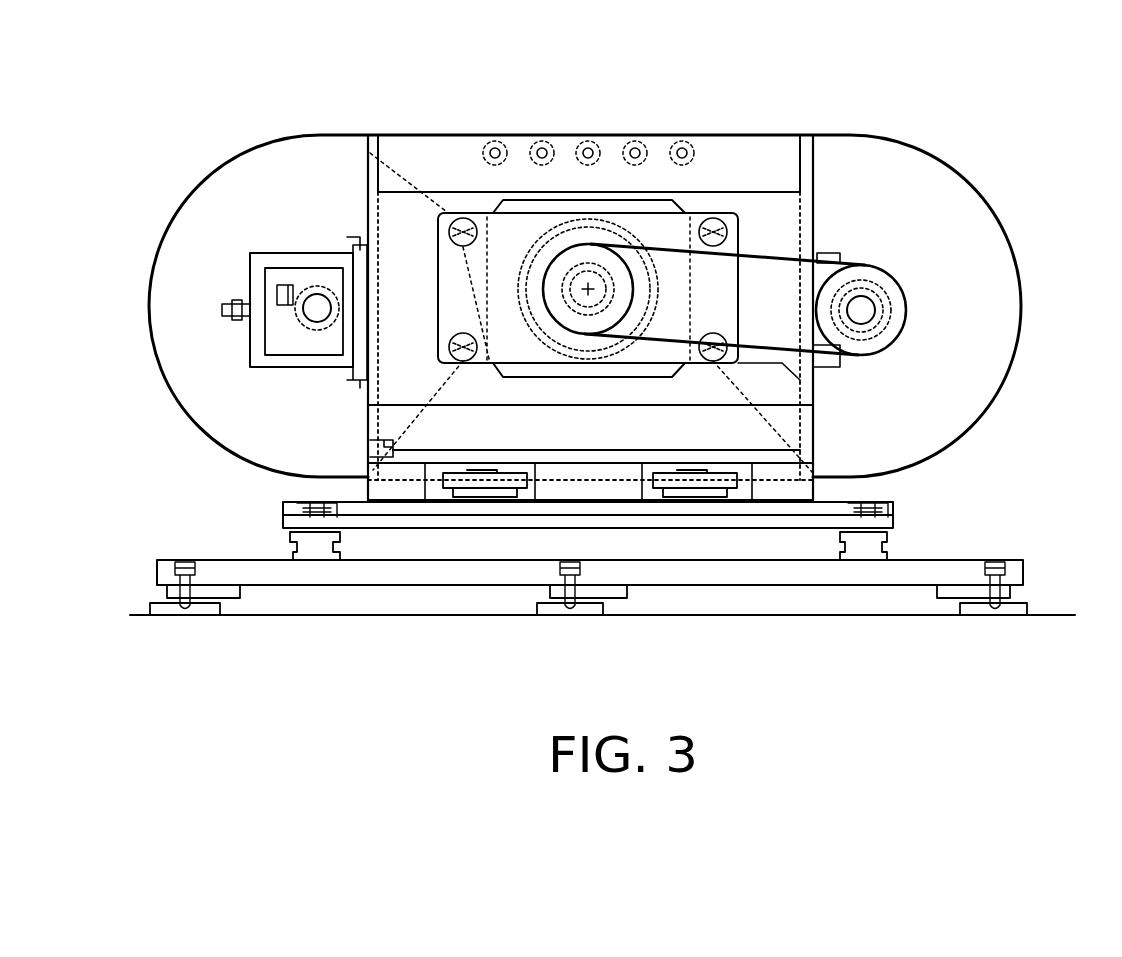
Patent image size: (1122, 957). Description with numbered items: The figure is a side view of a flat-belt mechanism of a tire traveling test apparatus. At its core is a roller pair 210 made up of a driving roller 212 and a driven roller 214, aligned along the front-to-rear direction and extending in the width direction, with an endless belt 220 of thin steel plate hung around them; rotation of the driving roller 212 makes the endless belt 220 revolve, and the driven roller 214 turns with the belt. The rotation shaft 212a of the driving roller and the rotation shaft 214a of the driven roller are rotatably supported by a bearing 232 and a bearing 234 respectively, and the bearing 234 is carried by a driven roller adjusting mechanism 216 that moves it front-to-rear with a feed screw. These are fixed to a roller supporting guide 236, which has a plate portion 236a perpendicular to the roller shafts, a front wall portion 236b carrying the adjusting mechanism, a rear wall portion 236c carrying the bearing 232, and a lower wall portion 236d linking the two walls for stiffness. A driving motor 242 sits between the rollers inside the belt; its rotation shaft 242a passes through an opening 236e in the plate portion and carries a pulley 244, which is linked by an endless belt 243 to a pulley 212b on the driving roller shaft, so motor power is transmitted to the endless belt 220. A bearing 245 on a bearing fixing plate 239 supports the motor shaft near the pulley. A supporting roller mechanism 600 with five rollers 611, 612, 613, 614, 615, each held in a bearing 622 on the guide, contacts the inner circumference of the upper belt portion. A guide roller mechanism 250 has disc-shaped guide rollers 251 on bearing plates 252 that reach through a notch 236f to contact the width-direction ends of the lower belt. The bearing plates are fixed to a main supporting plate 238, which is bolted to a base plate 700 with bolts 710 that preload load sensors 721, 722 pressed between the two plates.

The roller pair 210 is at (1030, 414).
The driving roller 212 is at (1003, 258).
The rotation shaft of the driving roller 212a is at (863, 290).
The pulley 212b is at (887, 338).
The driven roller 214 is at (212, 202).
The rotation shaft of the driven roller 214a is at (317, 328).
The driven roller adjusting mechanism 216 is at (250, 349).
The endless belt 220 is at (823, 128).
The bearing 232 is at (905, 310).
The bearing 234 is at (307, 287).
The roller supporting guide 236 is at (462, 134).
The plate portion 236a is at (438, 134).
The front wall portion 236b is at (370, 171).
The rear wall portion 236c is at (813, 174).
The lower wall portion 236d is at (373, 451).
The opening 236e is at (728, 135).
The notch 236f is at (500, 502).
The main supporting plate 238 is at (833, 500).
The bearing fixing plate 239 is at (403, 244).
The driving motor 242 is at (620, 240).
The rotation shaft of the driving motor 242a is at (575, 343).
The endless belt 243 is at (813, 372).
The pulley 244 is at (525, 259).
The bearing for the driving motor 245 is at (467, 190).
The guide roller mechanism 250 is at (513, 544).
The guide roller 251 is at (452, 473).
The bearing plate 252 is at (473, 497).
The supporting roller mechanism 600 is at (604, 91).
The roller 611 is at (505, 130).
The roller 612 is at (553, 133).
The roller 613 is at (597, 133).
The roller 614 is at (645, 133).
The roller 615 is at (712, 113).
The bearing 622 is at (515, 133).
The base plate 700 is at (1010, 560).
The bolt 710 is at (303, 504).
The load sensor 721 is at (322, 543).
The load sensor 722 is at (873, 553).